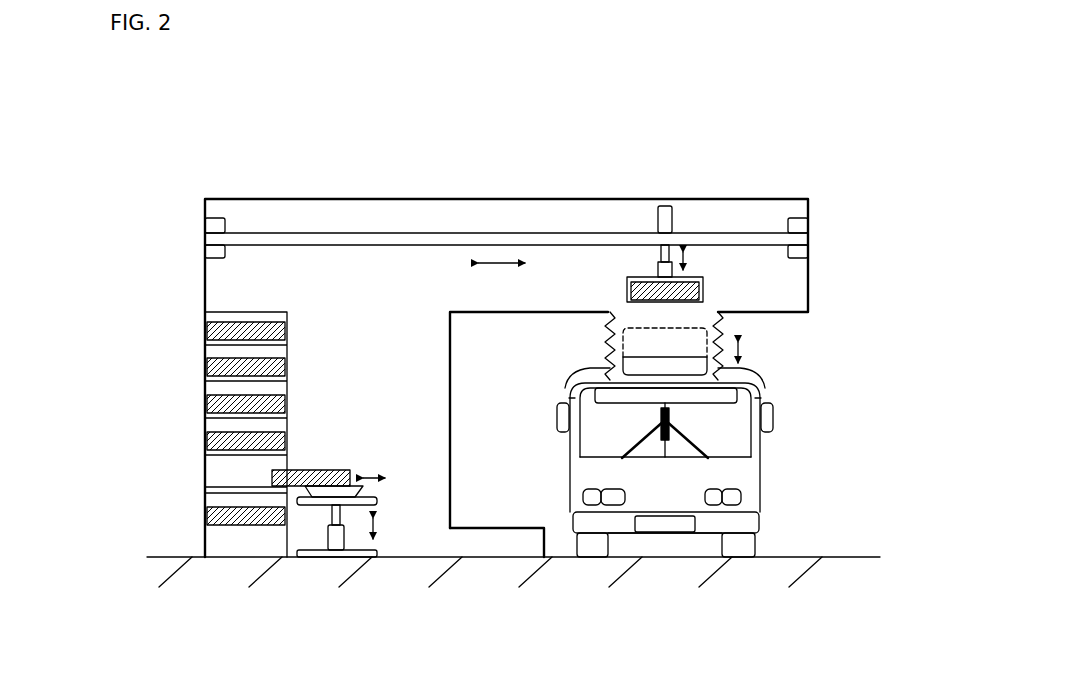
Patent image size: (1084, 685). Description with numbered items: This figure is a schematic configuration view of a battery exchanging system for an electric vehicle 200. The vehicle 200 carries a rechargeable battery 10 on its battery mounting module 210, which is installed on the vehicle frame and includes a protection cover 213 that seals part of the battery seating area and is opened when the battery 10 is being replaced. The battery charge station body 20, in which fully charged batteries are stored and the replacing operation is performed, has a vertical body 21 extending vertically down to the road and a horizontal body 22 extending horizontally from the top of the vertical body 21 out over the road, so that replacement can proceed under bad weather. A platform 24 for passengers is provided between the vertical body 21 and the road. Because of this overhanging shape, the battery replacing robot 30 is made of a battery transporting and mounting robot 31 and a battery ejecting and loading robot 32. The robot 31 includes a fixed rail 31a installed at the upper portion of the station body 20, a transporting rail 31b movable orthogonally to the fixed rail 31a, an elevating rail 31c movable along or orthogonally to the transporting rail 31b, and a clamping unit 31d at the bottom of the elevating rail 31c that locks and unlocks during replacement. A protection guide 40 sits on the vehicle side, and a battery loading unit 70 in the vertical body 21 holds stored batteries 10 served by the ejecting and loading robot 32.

The rechargeable battery 10 is at (205, 366).
The battery charge station body 20 is at (182, 147).
The vertical body 21 is at (205, 266).
The horizontal body 22 is at (206, 199).
The platform 24 is at (523, 548).
The battery replacing robot 30 is at (682, 85).
The battery transporting and mounting robot 31 is at (770, 127).
The fixed rail 31a is at (790, 223).
The transporting rail 31b is at (705, 235).
The elevating rail 31c is at (658, 214).
The clamping unit 31d is at (627, 278).
The battery ejecting and loading robot 32 is at (353, 464).
The protection guide 40 is at (613, 372).
The battery loading unit 70 is at (257, 309).
The electric vehicle 200 is at (717, 462).
The battery mounting module 210 is at (765, 385).
The protection cover 213 is at (605, 352).